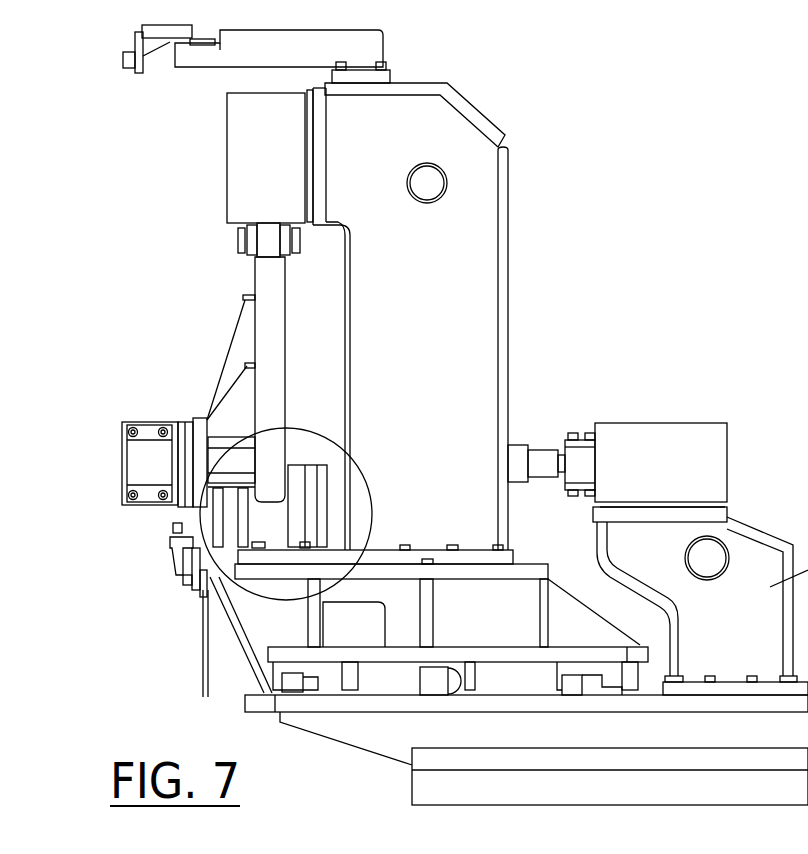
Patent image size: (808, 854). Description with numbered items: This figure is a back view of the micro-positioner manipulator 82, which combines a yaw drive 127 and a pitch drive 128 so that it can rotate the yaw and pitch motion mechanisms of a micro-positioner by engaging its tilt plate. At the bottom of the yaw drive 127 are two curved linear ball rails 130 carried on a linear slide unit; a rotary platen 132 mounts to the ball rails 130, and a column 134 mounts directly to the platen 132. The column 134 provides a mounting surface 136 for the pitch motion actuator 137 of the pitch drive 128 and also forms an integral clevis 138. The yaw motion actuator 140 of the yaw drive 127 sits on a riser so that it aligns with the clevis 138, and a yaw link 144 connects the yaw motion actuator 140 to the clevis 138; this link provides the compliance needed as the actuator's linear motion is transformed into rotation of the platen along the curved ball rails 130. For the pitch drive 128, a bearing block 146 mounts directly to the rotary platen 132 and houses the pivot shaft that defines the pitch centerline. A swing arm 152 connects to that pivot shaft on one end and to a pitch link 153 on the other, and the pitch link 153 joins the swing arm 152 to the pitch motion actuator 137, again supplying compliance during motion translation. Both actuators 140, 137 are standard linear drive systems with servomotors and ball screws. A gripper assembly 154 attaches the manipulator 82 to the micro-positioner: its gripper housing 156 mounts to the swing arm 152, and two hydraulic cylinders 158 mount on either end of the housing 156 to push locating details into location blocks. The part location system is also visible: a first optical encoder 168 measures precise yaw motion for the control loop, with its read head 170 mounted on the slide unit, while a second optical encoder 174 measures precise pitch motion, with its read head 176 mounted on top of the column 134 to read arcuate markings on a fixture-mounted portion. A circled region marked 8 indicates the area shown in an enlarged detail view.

The manipulator 82 is at (487, 106).
The column 134 is at (490, 310).
The pitch drive 128 is at (224, 156).
The mounting surface 136 is at (305, 145).
The pitch motion actuator 137 is at (240, 180).
The pitch link 153 is at (265, 238).
The swing arm 152 is at (262, 301).
The gripper assembly 154 is at (148, 406).
The gripper housing 156 is at (186, 432).
The hydraulic cylinders 158 is at (135, 455).
The bearing block 146 is at (267, 523).
The read head 170 is at (172, 537).
The first optical encoder 168 is at (147, 567).
The second optical encoder 174 is at (153, 70).
The read head 176 is at (126, 68).
The detail view circle 8 is at (372, 497).
The rotary platen 132 is at (505, 592).
The curved linear ball rails 130 is at (295, 688).
The yaw drive 127 is at (658, 508).
The integral clevis 138 is at (540, 447).
The yaw link 144 is at (588, 462).
The yaw motion actuator 140 is at (708, 457).